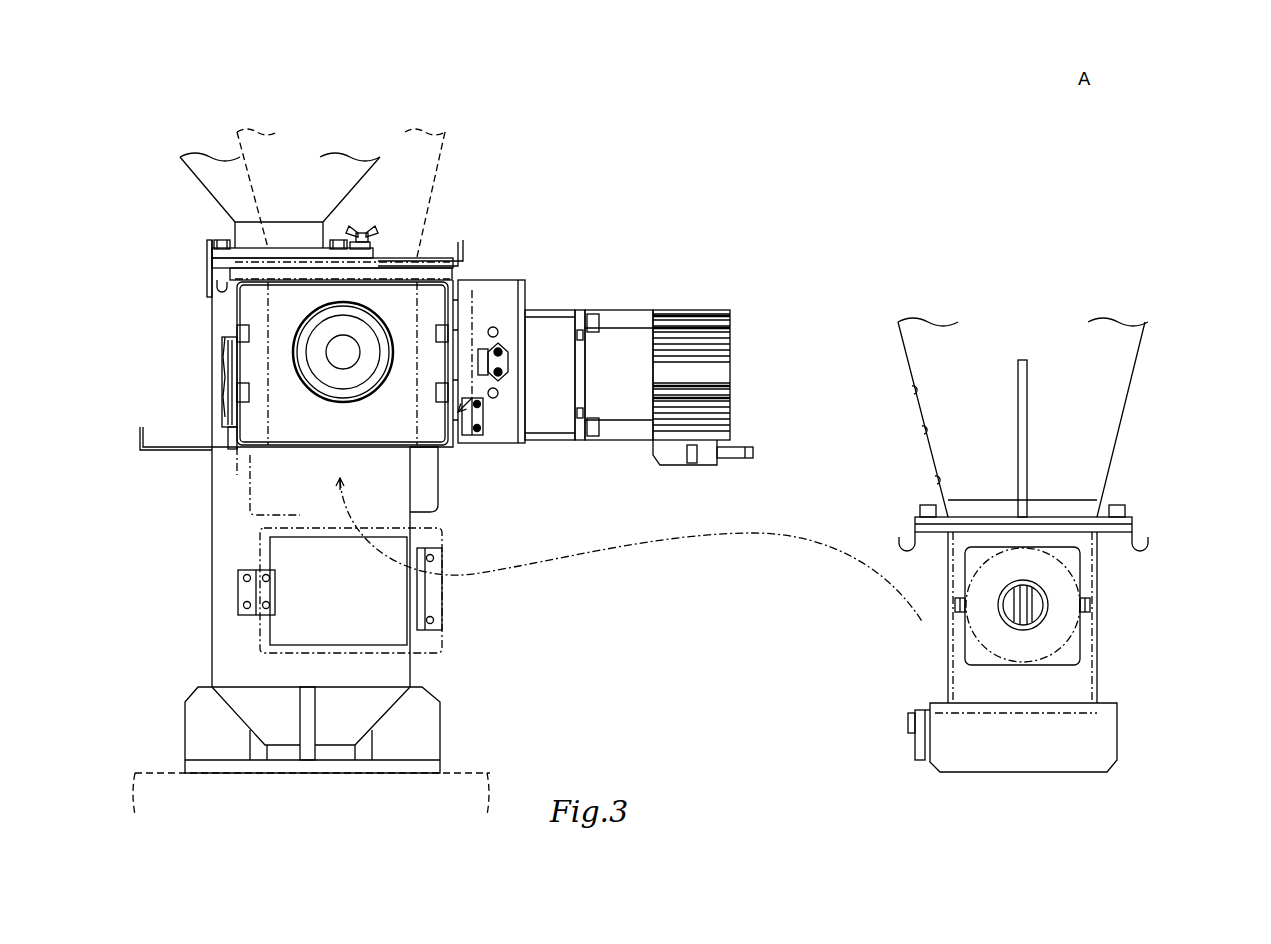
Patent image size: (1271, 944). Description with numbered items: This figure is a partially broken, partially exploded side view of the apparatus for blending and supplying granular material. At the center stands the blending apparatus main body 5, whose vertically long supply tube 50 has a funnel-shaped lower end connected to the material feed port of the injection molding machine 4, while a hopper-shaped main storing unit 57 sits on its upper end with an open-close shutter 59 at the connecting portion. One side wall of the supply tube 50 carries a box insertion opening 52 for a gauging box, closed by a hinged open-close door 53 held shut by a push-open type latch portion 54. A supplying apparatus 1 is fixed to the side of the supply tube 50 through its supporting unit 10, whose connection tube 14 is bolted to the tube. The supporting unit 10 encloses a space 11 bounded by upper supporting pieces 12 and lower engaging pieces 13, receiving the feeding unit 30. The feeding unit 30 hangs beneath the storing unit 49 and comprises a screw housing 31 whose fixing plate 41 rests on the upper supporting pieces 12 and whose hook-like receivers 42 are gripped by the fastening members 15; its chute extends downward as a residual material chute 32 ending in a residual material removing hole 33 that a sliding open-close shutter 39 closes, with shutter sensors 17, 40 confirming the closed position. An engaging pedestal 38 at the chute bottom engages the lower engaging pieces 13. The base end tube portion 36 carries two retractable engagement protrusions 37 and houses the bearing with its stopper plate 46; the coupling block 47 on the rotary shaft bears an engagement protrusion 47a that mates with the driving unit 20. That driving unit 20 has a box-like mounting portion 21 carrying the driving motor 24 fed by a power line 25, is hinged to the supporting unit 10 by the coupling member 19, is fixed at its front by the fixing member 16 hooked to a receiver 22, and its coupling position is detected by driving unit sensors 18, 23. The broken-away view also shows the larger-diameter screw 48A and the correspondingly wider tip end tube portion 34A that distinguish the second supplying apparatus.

The supplying apparatus 1 is at (845, 196).
The injection molding machine 4 is at (476, 768).
The blending apparatus main body 5 is at (186, 527).
The supporting unit 10 is at (215, 293).
The space for receiving the feeding unit 11 is at (301, 301).
The upper supporting piece 12 is at (253, 287).
The lower engaging piece 13 is at (250, 450).
The connection tube 14 is at (346, 333).
The fastening member 15 is at (220, 328).
The fixing member 16 is at (222, 366).
The open-close shutter sensor 17 is at (225, 450).
The driving unit sensor 18 is at (222, 428).
The coupling member 19 is at (456, 348).
The driving unit 20 is at (618, 271).
The mounting portion 21 is at (500, 281).
The hook-like receiver 22 is at (508, 358).
The driving unit sensor 23 is at (488, 422).
The driving motor 24 is at (638, 310).
The power line 25 is at (733, 458).
The feeding unit 30 is at (430, 424).
The screw housing 31 is at (941, 661).
The residual material chute 32 is at (1098, 663).
The residual material removing hole 33 is at (960, 705).
The tip end tube portion 34A is at (580, 535).
The base end tube portion 36 is at (972, 648).
The retractable engagement protrusion 37 is at (956, 605).
The engaging pedestal 38 is at (432, 512).
The open-close shutter 39 is at (240, 510).
The open-close shutter sensor 40 is at (240, 457).
The fixing plate 41 is at (441, 260).
The hook-like receiver 42 is at (216, 289).
The stopper plate 46 is at (1067, 662).
The coupling block 47 is at (997, 588).
The engagement protrusion 47a is at (1027, 590).
The screw 48A is at (348, 380).
The storing unit 49 is at (447, 140).
The supply tube 50 is at (212, 640).
The box insertion opening 52 is at (407, 640).
The open-close door 53 is at (445, 650).
The latch portion 54 is at (440, 600).
The main storing unit 57 is at (203, 170).
The open-close shutter 59 is at (207, 246).